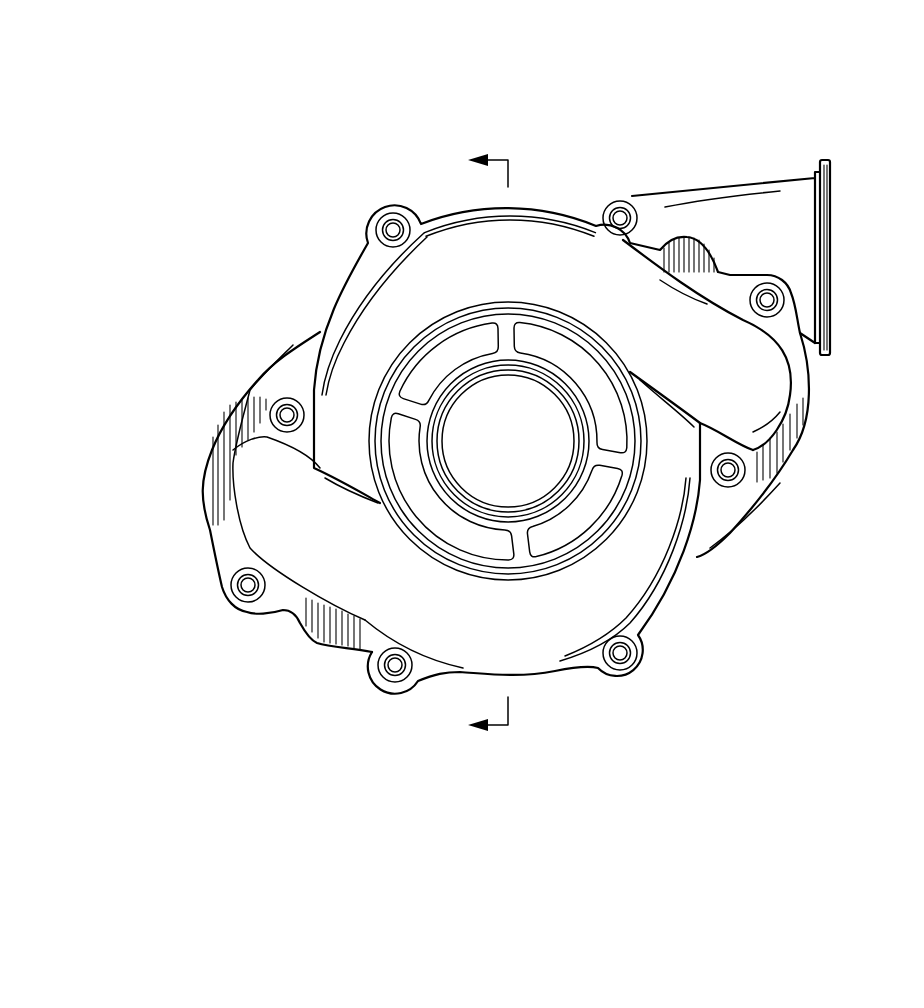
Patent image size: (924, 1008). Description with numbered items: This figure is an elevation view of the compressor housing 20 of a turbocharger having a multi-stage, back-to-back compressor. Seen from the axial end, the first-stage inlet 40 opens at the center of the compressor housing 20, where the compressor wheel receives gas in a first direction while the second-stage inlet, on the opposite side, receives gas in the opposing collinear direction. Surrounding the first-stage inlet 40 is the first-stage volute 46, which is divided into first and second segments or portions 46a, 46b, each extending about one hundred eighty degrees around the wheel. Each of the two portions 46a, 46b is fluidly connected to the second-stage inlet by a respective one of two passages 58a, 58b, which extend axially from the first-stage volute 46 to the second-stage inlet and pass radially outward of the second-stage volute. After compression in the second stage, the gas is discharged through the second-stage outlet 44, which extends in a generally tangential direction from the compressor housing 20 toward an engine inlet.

The compressor housing 20 is at (332, 206).
The first-stage inlet 40 is at (470, 409).
The second-stage outlet 44 is at (836, 200).
The first-stage volute 46 is at (915, 563).
The first portion of the first-stage volute 46a is at (430, 246).
The second portion of the first-stage volute 46b is at (633, 602).
The passage 58a is at (766, 398).
The passage 58b is at (250, 527).